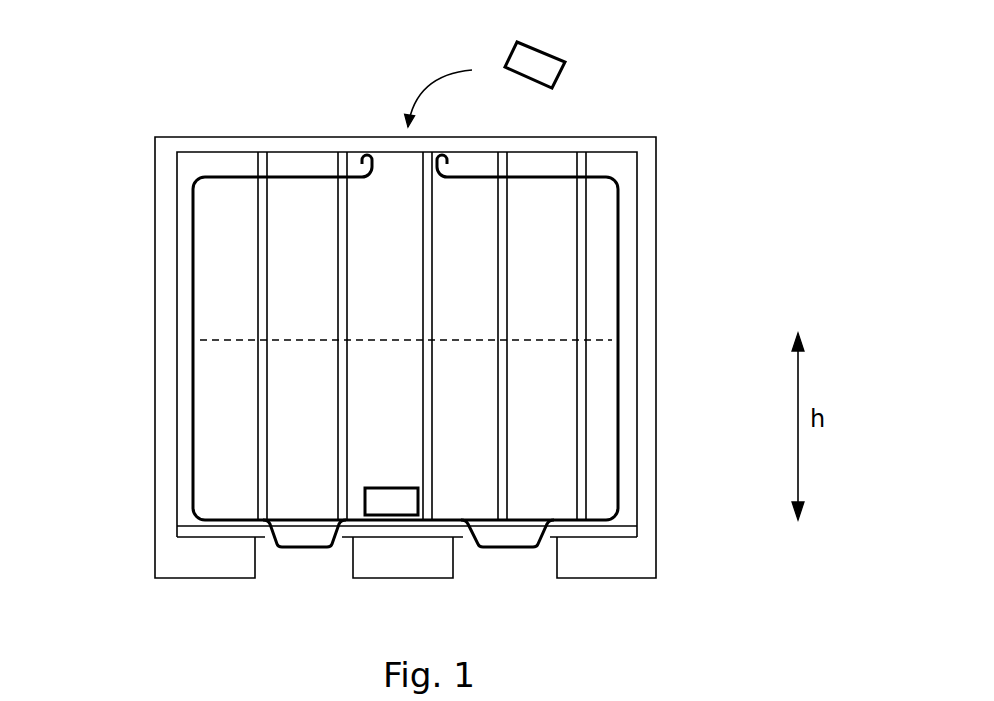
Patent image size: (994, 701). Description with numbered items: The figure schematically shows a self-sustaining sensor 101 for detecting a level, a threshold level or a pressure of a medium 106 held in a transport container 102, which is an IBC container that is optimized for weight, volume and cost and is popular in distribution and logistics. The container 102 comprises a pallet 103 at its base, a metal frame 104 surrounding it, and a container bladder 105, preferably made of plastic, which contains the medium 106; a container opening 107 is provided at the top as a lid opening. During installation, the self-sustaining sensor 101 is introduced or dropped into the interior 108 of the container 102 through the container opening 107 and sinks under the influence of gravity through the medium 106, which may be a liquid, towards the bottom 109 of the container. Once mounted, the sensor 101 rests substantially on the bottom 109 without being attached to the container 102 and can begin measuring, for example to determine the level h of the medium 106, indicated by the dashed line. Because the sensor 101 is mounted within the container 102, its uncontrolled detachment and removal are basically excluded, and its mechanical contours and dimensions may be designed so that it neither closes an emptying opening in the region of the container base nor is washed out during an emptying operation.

The self-sustaining sensor 101 is at (560, 47).
The transport container 102 is at (657, 238).
The pallet 103 is at (657, 550).
The metal frame 104 is at (168, 300).
The container bladder 105 is at (620, 411).
The medium 106 is at (600, 337).
The container opening 107 is at (377, 160).
The interior 108 is at (222, 227).
The bottom 109 is at (463, 523).